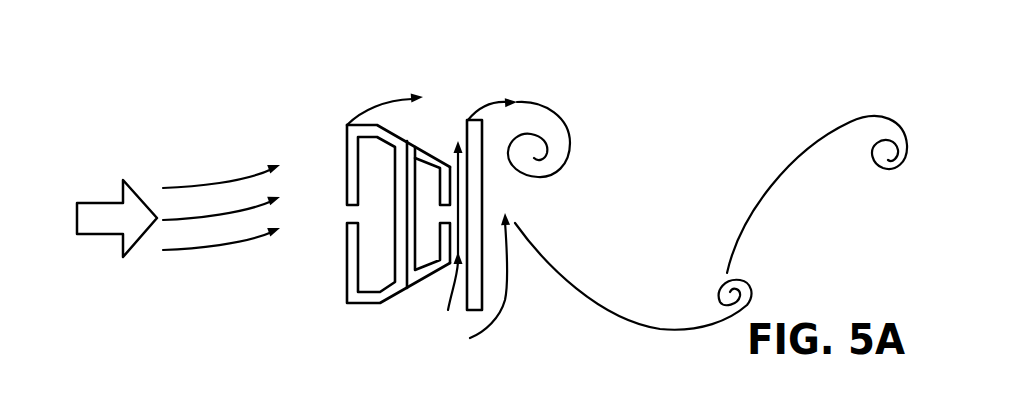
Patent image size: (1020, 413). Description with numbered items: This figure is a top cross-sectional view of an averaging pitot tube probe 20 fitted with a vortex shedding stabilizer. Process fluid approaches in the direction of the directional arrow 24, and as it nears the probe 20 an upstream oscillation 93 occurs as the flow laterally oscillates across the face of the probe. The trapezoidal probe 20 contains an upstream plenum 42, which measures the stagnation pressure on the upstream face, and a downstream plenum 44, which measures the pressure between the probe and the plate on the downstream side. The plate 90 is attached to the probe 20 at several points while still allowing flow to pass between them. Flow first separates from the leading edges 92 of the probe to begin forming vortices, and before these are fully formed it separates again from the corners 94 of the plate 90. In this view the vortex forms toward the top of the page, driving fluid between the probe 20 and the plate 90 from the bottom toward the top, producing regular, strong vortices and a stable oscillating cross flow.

The differential pressure measuring probe 20 is at (304, 97).
The directional arrow 24 is at (135, 228).
The upstream plenum 42 is at (370, 258).
The downstream plenum 44 is at (435, 182).
The plate 90 is at (482, 193).
The leading edges 92 is at (347, 125).
The upstream oscillation 93 is at (219, 156).
The corners 94 is at (467, 120).